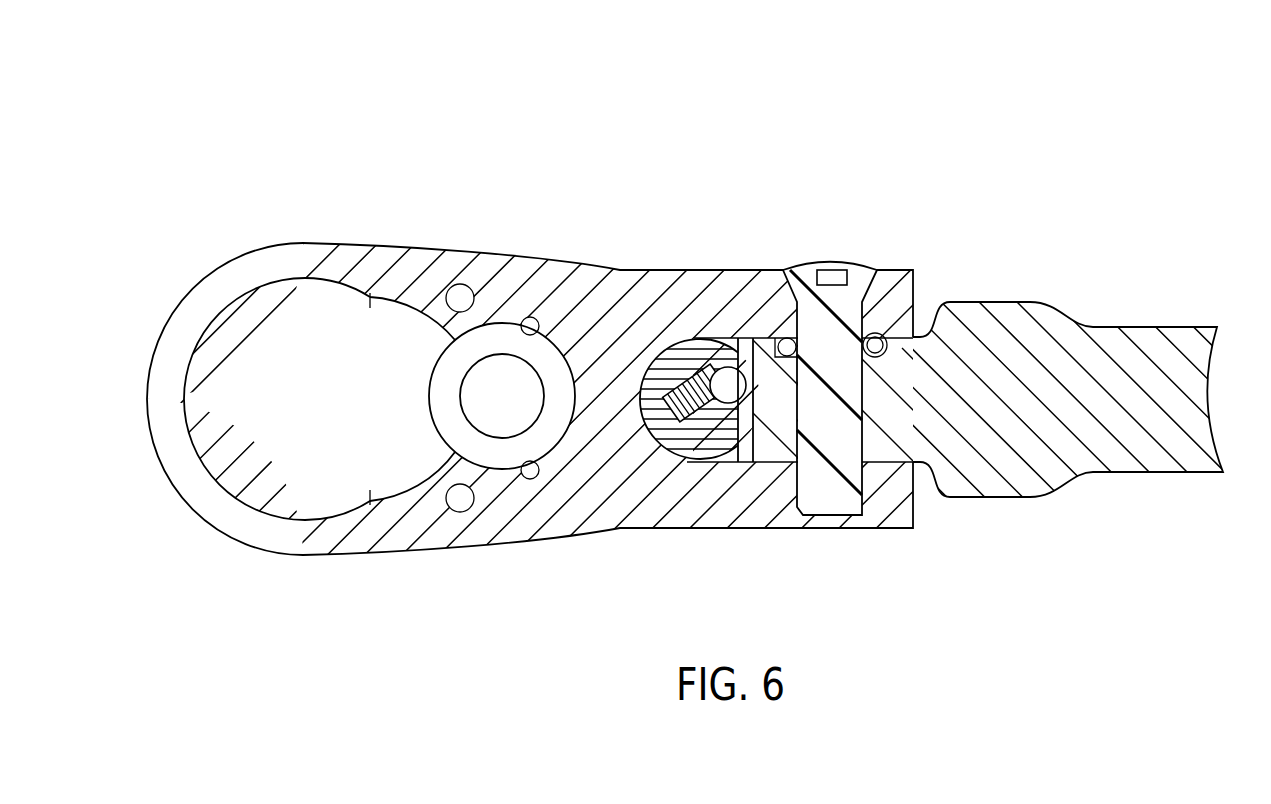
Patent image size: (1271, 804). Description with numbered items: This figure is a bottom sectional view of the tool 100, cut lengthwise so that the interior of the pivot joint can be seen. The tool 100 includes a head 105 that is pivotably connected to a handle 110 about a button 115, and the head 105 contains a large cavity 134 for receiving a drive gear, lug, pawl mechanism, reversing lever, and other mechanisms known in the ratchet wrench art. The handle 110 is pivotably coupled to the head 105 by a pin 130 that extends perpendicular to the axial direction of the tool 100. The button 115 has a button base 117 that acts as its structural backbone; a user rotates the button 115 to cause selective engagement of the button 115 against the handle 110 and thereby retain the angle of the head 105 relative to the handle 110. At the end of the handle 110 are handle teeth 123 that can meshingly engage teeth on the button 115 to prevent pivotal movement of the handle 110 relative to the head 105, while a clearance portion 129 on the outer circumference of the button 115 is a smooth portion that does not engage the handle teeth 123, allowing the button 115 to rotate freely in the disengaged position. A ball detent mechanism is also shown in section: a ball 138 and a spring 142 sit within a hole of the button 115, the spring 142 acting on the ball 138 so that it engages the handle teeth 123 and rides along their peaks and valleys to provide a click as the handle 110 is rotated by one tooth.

The tool 100 is at (291, 103).
The head 105 is at (293, 267).
The handle 110 is at (1165, 348).
The button 115 is at (640, 437).
The button base 117 is at (772, 322).
The handle teeth 123 is at (737, 338).
The clearance portion 129 is at (745, 445).
The pin 130 is at (830, 273).
The cavity 134 is at (260, 473).
The ball 138 is at (745, 442).
The spring 142 is at (690, 385).